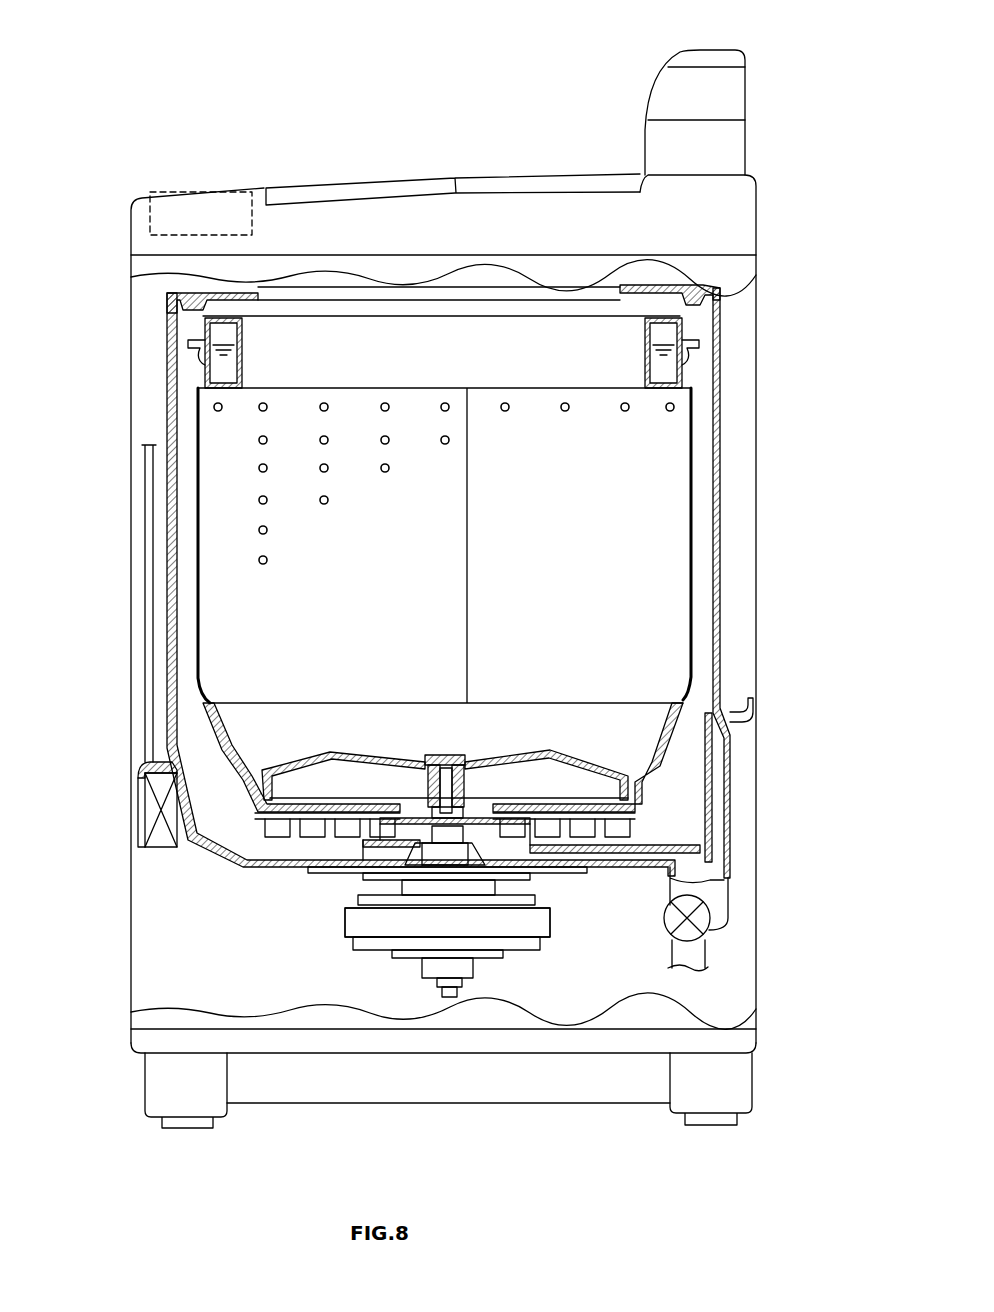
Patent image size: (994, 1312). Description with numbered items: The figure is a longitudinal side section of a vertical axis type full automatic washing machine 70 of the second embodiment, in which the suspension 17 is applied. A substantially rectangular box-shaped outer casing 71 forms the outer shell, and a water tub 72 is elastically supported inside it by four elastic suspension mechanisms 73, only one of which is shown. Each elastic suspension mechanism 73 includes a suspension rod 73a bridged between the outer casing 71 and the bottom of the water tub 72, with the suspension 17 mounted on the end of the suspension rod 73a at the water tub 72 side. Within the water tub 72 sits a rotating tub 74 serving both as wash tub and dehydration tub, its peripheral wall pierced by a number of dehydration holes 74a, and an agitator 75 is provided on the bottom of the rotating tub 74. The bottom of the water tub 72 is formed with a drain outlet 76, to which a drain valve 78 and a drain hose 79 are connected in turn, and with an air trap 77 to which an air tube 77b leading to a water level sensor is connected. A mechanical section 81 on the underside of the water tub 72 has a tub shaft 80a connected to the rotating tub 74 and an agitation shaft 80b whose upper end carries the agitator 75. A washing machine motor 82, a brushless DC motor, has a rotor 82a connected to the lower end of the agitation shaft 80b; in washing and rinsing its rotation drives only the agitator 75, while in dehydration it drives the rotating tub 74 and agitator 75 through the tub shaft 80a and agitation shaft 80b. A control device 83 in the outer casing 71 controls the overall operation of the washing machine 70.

The washing machine 70 is at (785, 105).
The outer casing 71 is at (131, 343).
The water tub 72 is at (167, 385).
The elastic suspension mechanism 73 is at (147, 752).
The suspension rod 73a is at (147, 550).
The rotating tub 74 is at (205, 635).
The dehydration holes 74a is at (267, 560).
The agitator 75 is at (480, 752).
The drain outlet 76 is at (668, 867).
The air trap 77 is at (712, 855).
The air tube 77b is at (753, 712).
The drain valve 78 is at (662, 915).
The drain hose 79 is at (667, 958).
The tub shaft 80a is at (383, 838).
The agitation shaft 80b is at (428, 760).
The mechanical section 81 is at (400, 882).
The washing machine motor 82 is at (380, 958).
The rotor 82a is at (518, 927).
The control device 83 is at (150, 210).
The suspension 17 is at (147, 830).